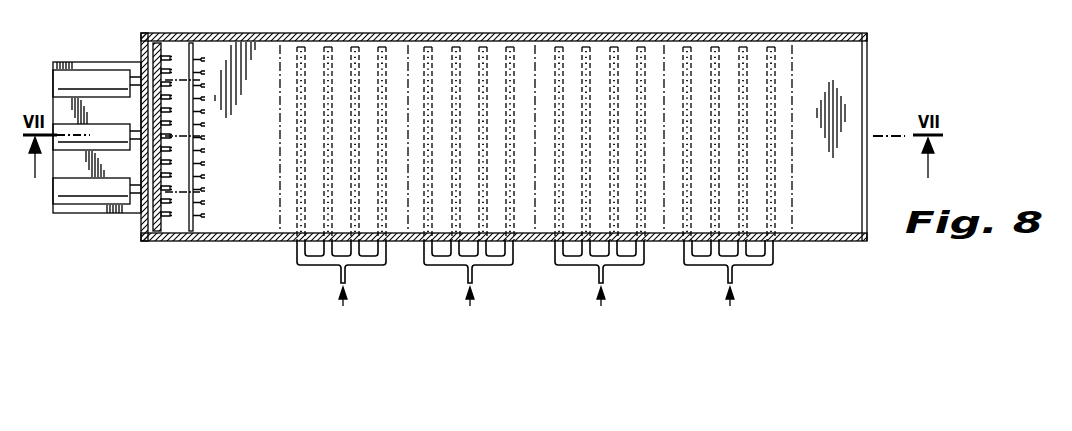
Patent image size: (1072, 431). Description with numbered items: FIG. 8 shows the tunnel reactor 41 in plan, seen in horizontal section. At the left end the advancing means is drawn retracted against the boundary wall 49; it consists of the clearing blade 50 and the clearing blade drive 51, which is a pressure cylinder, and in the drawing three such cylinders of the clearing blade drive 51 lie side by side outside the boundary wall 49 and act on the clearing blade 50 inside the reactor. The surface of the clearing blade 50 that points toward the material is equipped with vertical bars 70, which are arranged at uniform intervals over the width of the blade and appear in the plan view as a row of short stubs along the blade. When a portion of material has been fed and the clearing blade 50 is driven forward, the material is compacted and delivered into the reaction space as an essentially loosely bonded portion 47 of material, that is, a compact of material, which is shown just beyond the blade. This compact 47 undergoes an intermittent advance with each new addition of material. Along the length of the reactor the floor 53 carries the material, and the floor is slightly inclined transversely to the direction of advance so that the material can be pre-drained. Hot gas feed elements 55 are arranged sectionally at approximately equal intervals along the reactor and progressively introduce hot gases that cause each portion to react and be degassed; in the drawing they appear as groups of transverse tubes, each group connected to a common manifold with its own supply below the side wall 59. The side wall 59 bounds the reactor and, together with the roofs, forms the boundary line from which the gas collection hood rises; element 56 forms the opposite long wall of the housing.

The tunnel reactor 41 is at (483, 153).
The bonded portion of material 47 is at (252, 153).
The boundary wall 49 is at (143, 46).
The clearing blade 50 is at (141, 112).
The clearing blade drive 51 is at (60, 81).
The floor 53 is at (572, 148).
The hot gas feed elements 55 is at (301, 253).
The housing top wall 56 is at (580, 33).
The side wall 59 is at (535, 241).
The vertical bars 70 is at (165, 217).